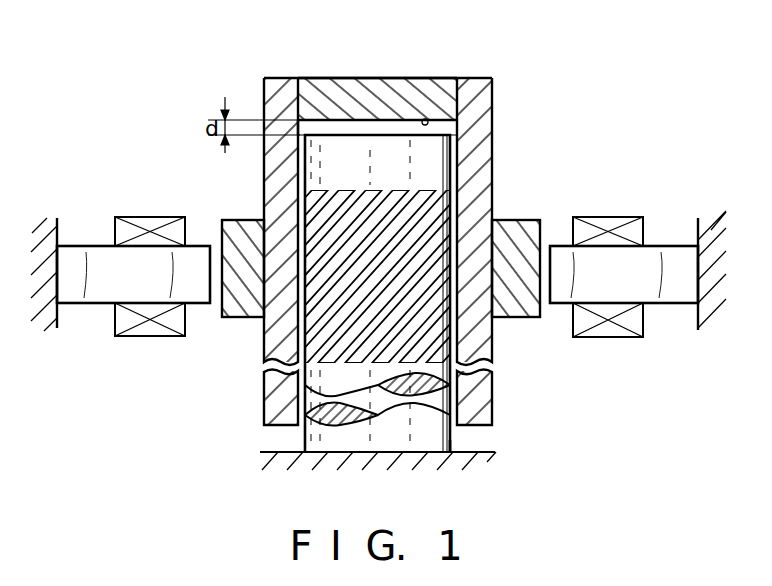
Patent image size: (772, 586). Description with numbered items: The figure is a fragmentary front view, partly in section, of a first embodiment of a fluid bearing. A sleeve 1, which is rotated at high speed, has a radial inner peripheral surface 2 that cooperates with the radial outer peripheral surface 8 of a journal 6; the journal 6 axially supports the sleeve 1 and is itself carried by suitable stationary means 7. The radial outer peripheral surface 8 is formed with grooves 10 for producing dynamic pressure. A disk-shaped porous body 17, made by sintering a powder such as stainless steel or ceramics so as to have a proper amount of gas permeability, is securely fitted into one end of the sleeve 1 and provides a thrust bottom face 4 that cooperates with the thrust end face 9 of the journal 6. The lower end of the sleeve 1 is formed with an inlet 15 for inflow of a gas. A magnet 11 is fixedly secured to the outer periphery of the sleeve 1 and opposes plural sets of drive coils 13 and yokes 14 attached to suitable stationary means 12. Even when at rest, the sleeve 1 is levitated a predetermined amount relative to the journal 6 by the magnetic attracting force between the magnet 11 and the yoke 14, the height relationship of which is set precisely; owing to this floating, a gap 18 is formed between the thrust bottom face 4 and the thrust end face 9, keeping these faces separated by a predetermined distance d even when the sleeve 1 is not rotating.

The sleeve 1 is at (493, 145).
The radial inner peripheral surface 2 is at (459, 180).
The thrust bottom face 4 is at (425, 118).
The journal 6 is at (457, 443).
The stationary means 7 is at (478, 468).
The radial outer peripheral surface 8 is at (297, 190).
The thrust end face 9 is at (444, 135).
The grooves 10 is at (322, 334).
The magnet 11 is at (238, 224).
The stationary means 12 is at (710, 235).
The drive coils 13 is at (132, 217).
The yokes 14 is at (72, 250).
The inlet 15 is at (300, 430).
The porous body 17 is at (372, 80).
The gap 18 is at (323, 132).